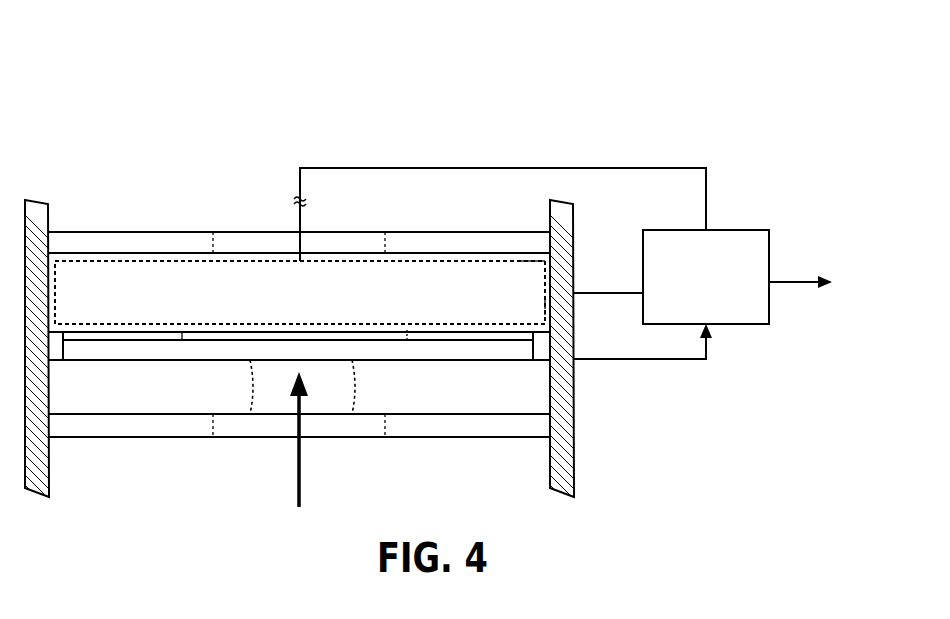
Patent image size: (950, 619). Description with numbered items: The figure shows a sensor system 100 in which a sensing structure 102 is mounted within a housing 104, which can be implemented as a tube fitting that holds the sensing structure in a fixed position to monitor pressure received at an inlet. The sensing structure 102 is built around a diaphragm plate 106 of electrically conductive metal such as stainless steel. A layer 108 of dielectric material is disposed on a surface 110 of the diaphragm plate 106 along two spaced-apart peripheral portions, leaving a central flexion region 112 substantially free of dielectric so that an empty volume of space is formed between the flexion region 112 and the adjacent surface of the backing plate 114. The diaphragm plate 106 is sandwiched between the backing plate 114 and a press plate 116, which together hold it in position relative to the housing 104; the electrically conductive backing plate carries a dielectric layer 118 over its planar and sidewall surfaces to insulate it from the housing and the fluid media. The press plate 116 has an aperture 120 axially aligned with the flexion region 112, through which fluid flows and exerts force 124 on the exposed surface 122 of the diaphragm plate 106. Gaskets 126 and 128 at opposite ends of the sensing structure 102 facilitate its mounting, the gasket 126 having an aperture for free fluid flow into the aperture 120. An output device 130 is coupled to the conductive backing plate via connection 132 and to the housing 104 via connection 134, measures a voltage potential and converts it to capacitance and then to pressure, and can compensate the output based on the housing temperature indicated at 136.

The sensor system 100 is at (112, 99).
The sensing structure 102 is at (105, 170).
The housing 104 is at (565, 463).
The diaphragm plate 106 is at (510, 370).
The layer of dielectric material 108 is at (553, 339).
The surface of the diaphragm plate 110 is at (368, 338).
The flexion region 112 is at (229, 336).
The backing plate 114 is at (548, 262).
The press plate 116 is at (545, 312).
The dielectric layer 118 is at (143, 258).
The aperture 120 is at (246, 398).
The exposed surface 122 is at (320, 361).
The force 124 is at (297, 484).
The gasket 126 is at (462, 425).
The gasket 128 is at (158, 232).
The output device 130 is at (725, 230).
The connection 132 is at (527, 168).
The connection 134 is at (580, 292).
The temperature of the housing 136 is at (682, 360).